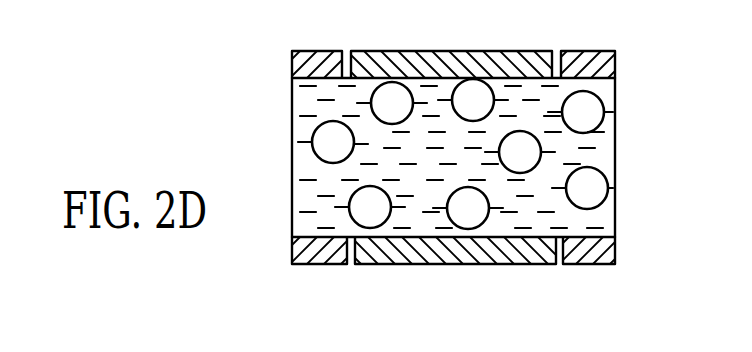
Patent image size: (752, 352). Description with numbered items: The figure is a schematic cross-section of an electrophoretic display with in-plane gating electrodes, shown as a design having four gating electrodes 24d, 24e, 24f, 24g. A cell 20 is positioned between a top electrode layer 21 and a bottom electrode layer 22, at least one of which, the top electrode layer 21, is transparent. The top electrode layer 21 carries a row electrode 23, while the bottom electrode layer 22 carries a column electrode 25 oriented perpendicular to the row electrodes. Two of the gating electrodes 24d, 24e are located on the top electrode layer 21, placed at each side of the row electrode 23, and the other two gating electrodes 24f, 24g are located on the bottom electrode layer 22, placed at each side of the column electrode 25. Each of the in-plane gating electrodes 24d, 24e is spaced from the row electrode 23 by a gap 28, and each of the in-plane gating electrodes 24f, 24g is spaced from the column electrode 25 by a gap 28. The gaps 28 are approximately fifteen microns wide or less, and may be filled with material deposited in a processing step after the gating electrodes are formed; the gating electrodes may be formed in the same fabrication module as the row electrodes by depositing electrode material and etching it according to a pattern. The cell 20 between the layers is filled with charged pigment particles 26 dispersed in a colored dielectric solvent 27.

The cell 20 is at (628, 149).
The top electrode layer 21 is at (628, 62).
The bottom electrode layer 22 is at (628, 248).
The row electrode 23 is at (452, 52).
The gating electrode 24d is at (312, 56).
The gating electrode 24e is at (592, 56).
The gating electrode 24f is at (317, 255).
The gating electrode 24g is at (590, 251).
The column electrode 25 is at (456, 252).
The charged pigment particles 26 is at (316, 127).
The colored dielectric solvent 27 is at (306, 215).
The gap 28 is at (347, 51).